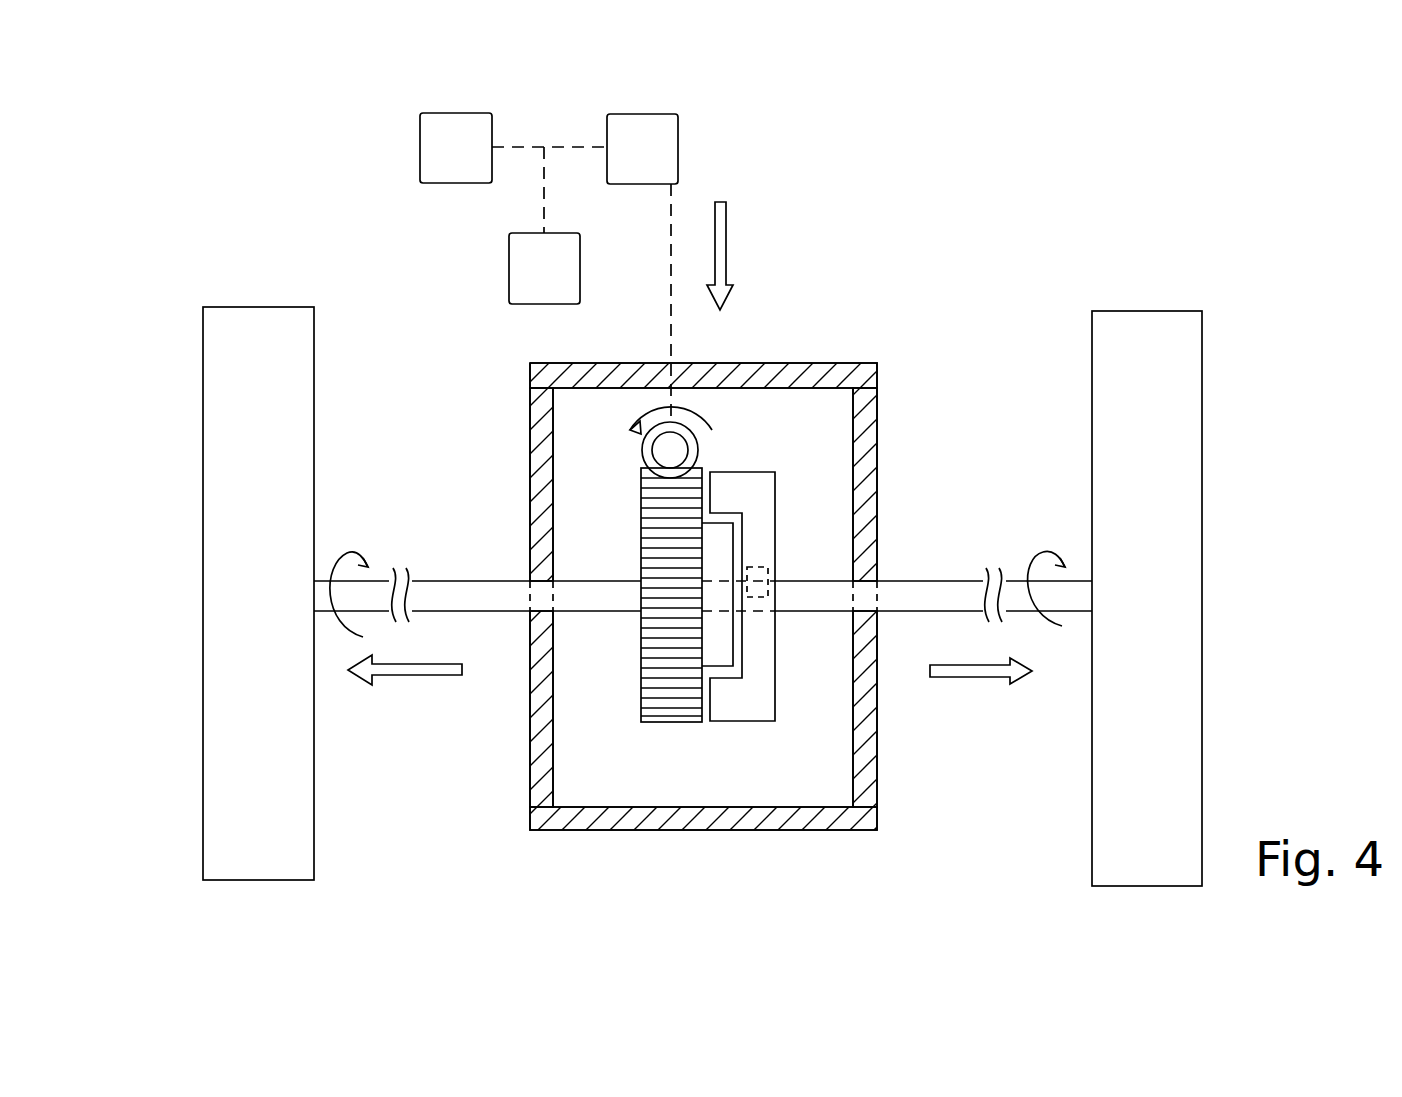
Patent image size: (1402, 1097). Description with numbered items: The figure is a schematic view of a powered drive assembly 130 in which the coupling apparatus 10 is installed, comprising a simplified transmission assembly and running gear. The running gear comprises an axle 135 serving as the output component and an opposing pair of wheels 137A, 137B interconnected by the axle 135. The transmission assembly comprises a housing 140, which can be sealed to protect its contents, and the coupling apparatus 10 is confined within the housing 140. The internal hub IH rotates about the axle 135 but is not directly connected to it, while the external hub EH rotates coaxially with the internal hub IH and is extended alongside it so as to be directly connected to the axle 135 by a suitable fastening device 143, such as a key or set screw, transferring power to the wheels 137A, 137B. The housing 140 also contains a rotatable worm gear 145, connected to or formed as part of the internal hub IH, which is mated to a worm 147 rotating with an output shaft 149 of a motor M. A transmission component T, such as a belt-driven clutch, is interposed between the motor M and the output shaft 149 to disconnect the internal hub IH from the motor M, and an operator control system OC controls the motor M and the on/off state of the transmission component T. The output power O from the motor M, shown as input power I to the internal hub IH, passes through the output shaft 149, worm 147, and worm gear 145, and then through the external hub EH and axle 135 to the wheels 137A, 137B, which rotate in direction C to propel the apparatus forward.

The drive assembly 130 is at (952, 297).
The axle 135 is at (904, 613).
The wheel 137A is at (203, 335).
The wheel 137B is at (1203, 337).
The housing 140 is at (528, 758).
The sensor 143 is at (768, 567).
The worm gear 145 is at (663, 723).
The worm 147 is at (700, 450).
The output shaft 149 is at (644, 453).
The coupling apparatus 10 is at (787, 695).
The internal hub IH is at (727, 673).
The external hub EH is at (777, 730).
The input power I is at (728, 220).
The output power O is at (415, 676).
The rotation direction C is at (343, 560).
The motor M is at (456, 148).
The transmission component T is at (642, 149).
The operator control system OC is at (544, 268).